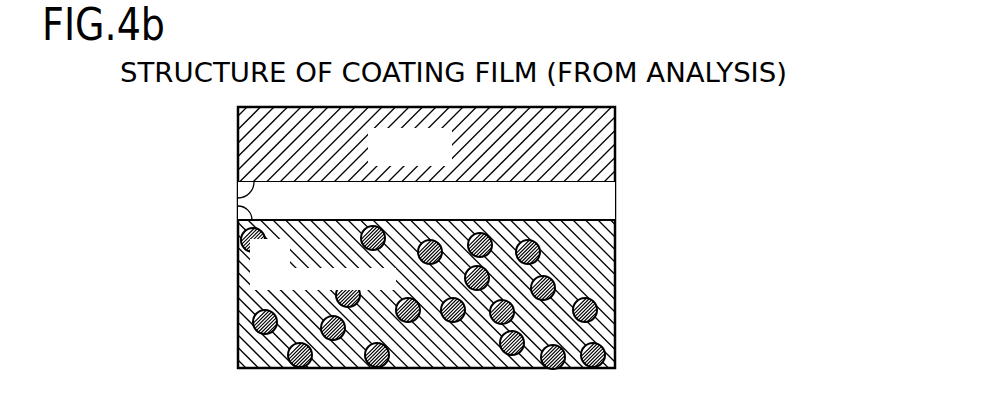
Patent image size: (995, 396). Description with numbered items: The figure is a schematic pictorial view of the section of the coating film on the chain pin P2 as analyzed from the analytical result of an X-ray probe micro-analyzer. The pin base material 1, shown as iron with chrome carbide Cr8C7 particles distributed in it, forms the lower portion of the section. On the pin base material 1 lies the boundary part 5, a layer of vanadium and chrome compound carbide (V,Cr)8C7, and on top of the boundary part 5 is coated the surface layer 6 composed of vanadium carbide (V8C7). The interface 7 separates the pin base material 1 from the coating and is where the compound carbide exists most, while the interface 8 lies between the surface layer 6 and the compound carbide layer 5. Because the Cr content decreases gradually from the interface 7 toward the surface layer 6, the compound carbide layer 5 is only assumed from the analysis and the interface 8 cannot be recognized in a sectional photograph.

The surface layer 6 is at (615, 137).
The boundary part 5 is at (615, 202).
The pin base material 1 is at (605, 248).
The interface 8 is at (238, 198).
The interface 7 is at (238, 208).
The chain pin P2 is at (219, 138).
The chrome carbide Cr8C7 is at (597, 340).